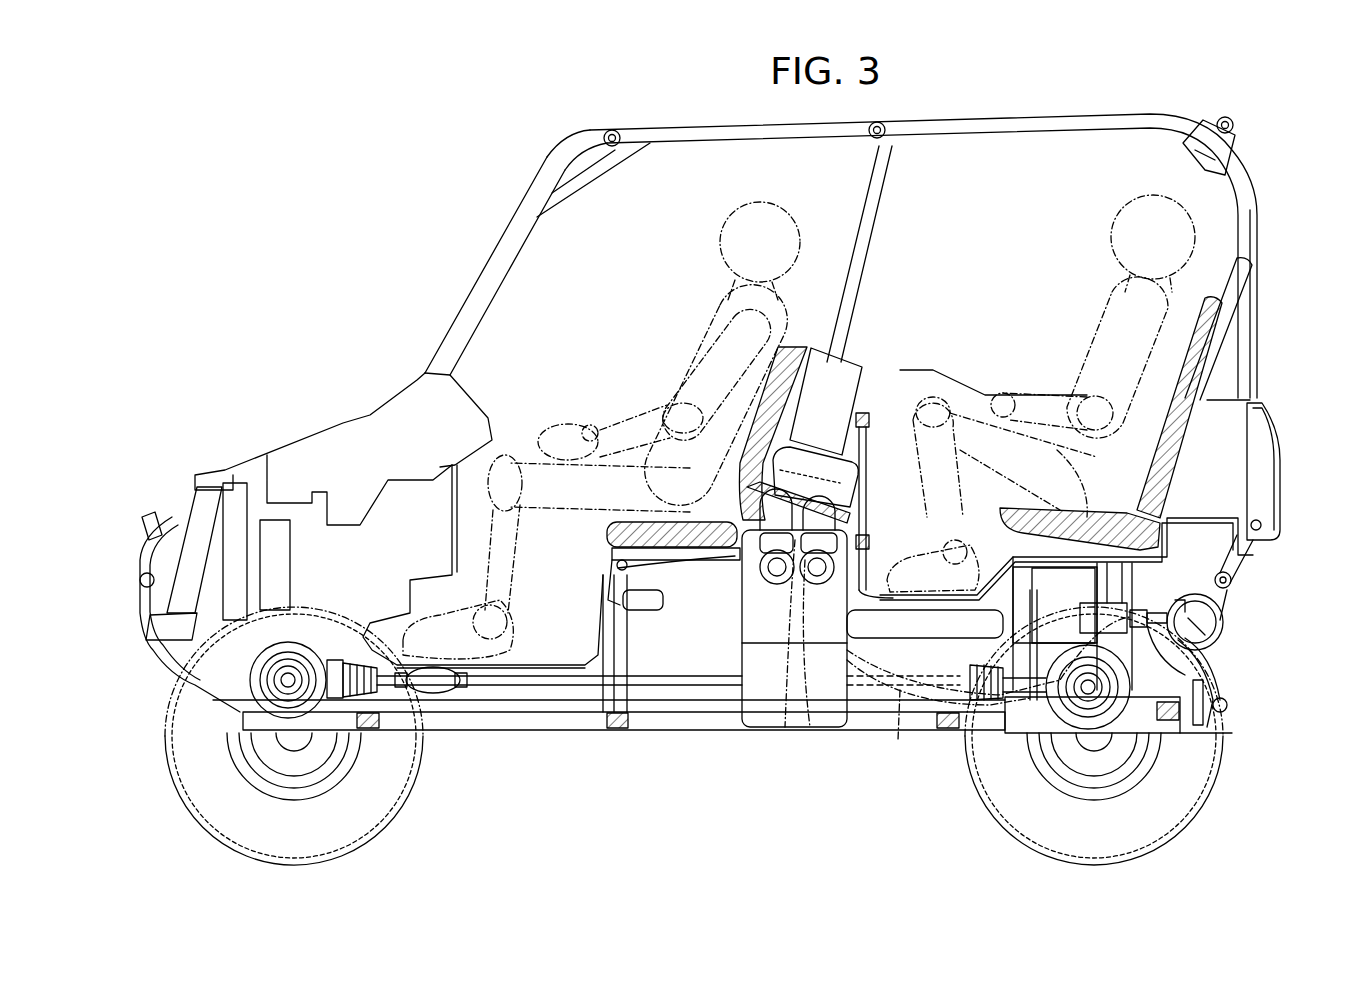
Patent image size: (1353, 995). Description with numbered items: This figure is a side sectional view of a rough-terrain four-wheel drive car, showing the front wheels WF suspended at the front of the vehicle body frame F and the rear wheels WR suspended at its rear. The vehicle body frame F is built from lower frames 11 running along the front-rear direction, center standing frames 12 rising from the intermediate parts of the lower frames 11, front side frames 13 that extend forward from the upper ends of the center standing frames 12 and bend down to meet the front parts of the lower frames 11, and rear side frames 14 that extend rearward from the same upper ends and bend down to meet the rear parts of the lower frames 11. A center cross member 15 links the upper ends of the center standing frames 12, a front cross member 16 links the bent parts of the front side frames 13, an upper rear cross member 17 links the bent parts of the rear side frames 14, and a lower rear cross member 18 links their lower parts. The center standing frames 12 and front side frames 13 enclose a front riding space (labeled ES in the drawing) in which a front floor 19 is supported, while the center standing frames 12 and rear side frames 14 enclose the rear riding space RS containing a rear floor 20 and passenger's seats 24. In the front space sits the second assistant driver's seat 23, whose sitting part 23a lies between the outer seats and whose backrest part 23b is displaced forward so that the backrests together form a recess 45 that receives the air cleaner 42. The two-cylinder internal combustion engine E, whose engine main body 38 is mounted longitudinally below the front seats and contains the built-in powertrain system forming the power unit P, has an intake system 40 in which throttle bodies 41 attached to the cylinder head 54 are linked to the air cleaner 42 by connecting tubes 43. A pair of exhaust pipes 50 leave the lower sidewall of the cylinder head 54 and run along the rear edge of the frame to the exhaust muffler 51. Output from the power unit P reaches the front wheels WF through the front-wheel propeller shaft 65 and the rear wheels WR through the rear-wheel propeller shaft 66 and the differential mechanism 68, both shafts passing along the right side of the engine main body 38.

The lower frame 11 is at (500, 722).
The center standing frame 12 is at (852, 258).
The front side frame 13 is at (470, 307).
The rear side frame 14 is at (1040, 124).
The center cross member 15 is at (876, 140).
The front cross member 16 is at (611, 130).
The upper rear cross member 17 is at (1232, 118).
The lower rear cross member 18 is at (1232, 578).
The front floor 19 is at (557, 672).
The rear floor 20 is at (935, 607).
The second assistant driver's seat 23 is at (713, 447).
The sitting part 23a is at (650, 520).
The backrest part 23b is at (744, 398).
The passenger's seat 24 is at (1076, 510).
The engine main body 38 is at (852, 630).
The intake system 40 is at (808, 440).
The throttle body 41 is at (852, 522).
The air cleaner 42 is at (787, 435).
The connecting tube 43 is at (840, 465).
The recess 45 is at (860, 360).
The exhaust pipe 50 is at (900, 745).
The exhaust muffler 51 is at (1215, 622).
The cylinder head 54 is at (778, 660).
The front-wheel propeller shaft 65 is at (523, 678).
The rear-wheel propeller shaft 66 is at (893, 700).
The differential mechanism 68 is at (1037, 700).
The internal combustion engine E is at (925, 520).
The front seat space ES is at (629, 263).
The rear riding space RS is at (1022, 263).
The vehicle body frame F is at (650, 735).
The power unit P is at (730, 640).
The front wheel WF is at (400, 757).
The rear wheel WR is at (1185, 775).